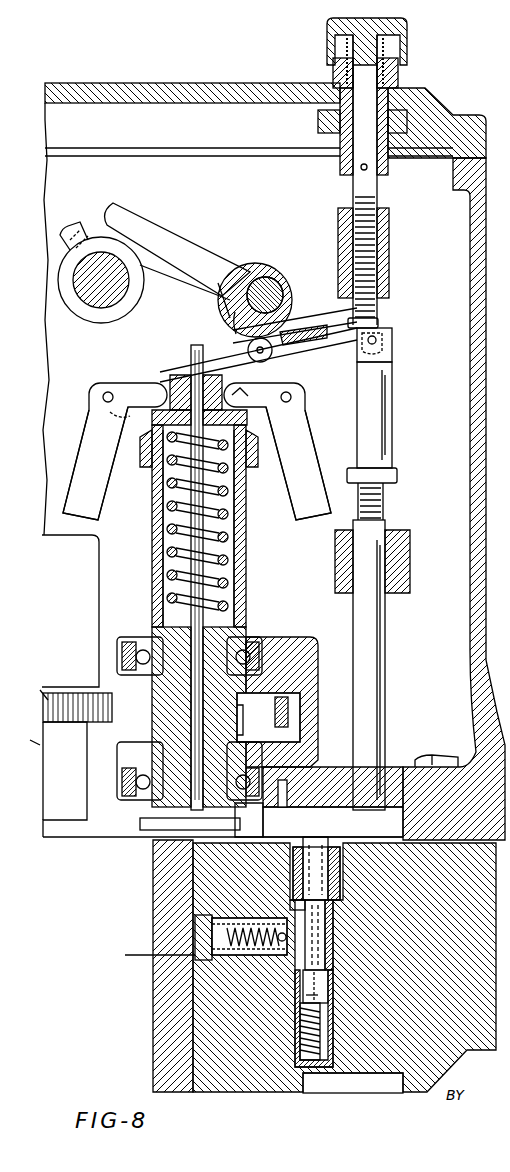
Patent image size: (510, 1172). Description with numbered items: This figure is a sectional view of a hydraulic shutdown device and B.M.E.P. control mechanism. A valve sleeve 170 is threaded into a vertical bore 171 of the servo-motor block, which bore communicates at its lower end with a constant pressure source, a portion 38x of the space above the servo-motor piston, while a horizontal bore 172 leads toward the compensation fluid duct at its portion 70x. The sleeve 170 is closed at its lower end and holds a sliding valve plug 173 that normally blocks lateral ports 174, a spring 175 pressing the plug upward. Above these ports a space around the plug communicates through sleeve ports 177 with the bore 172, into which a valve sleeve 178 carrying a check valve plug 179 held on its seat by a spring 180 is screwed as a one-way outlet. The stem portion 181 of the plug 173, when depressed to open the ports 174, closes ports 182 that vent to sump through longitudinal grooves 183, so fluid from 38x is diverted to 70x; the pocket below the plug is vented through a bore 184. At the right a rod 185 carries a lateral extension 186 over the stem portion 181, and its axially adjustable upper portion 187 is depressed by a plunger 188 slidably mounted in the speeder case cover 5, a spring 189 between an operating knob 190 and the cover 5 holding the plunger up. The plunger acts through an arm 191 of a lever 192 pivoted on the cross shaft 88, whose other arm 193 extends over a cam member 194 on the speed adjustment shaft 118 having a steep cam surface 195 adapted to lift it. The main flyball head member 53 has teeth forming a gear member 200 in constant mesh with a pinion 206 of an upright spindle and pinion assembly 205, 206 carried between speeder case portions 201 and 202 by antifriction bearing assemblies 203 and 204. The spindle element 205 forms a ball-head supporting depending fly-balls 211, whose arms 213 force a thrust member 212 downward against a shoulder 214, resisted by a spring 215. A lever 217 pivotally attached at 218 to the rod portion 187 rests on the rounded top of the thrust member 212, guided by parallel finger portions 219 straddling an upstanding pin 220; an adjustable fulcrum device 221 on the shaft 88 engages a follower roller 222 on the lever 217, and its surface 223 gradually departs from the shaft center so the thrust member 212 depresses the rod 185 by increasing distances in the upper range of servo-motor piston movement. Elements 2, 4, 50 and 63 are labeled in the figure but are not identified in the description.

The base 2 is at (160, 906).
The housing wall 4 is at (487, 480).
The speeder case cover 5 is at (175, 82).
The portion of space above servo-motor piston 38x is at (362, 1080).
The shaft 50 is at (42, 738).
The main flyball head member 53 is at (65, 779).
The upper member 63 is at (70, 611).
The portion of compensation fluid duct 70x is at (125, 955).
The cross shaft 88 is at (288, 278).
The speed adjustment shaft 118 is at (90, 314).
The valve sleeve 170 is at (330, 953).
The vertical bore 171 is at (295, 1058).
The horizontal bore 172 is at (275, 958).
The sliding valve plug 173 is at (320, 991).
The lateral ports 174 is at (328, 979).
The spring 175 is at (300, 1041).
The sleeve ports 177 is at (330, 936).
The valve sleeve 178 is at (250, 916).
The check valve plug 179 is at (262, 956).
The spring 180 is at (225, 958).
The stem portion 181 is at (305, 867).
The ports 182 is at (333, 901).
The longitudinal grooves 183 is at (340, 881).
The bore 184 is at (340, 866).
The rod 185 is at (377, 656).
The lateral extension 186 is at (330, 810).
The axially adjustable rod portion 187 is at (385, 421).
The plunger 188 is at (389, 236).
The spring 189 is at (376, 49).
The operating knob 190 is at (327, 28).
The arm 191 is at (372, 318).
The lever 192 is at (220, 273).
The arm 193 is at (150, 230).
The cam member 194 is at (140, 265).
The steep cam surface 195 is at (85, 240).
The gear member 200 is at (65, 698).
The speeder case portion 201 is at (80, 830).
The speeder case portion 202 is at (310, 652).
The antifriction bearing assembly 203 is at (135, 792).
The antifriction bearing assembly 204 is at (262, 638).
The spindle element 205 is at (246, 581).
The pinion 206 is at (290, 712).
The fly-balls 211 is at (90, 422).
The thrust member 212 is at (150, 368).
The fly-ball arms 213 is at (255, 393).
The shoulder 214 is at (148, 455).
The spring 215 is at (226, 531).
The lever 217 is at (275, 343).
The pivot 218 is at (378, 337).
The parallel finger portions 219 is at (172, 368).
The upstanding pin 220 is at (188, 343).
The adjustable fulcrum device 221 is at (245, 265).
The follower roller 222 is at (232, 328).
The surface 223 is at (225, 303).